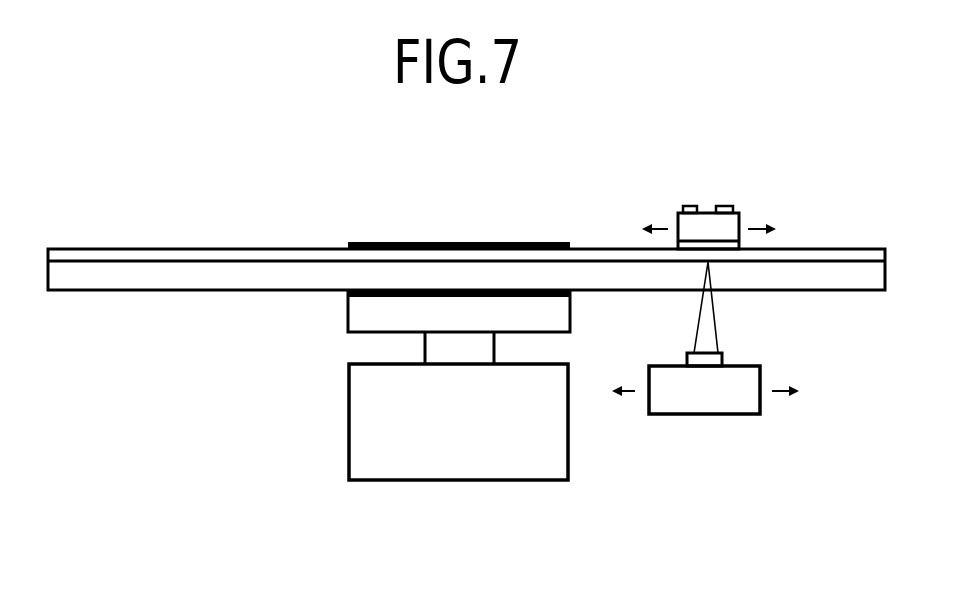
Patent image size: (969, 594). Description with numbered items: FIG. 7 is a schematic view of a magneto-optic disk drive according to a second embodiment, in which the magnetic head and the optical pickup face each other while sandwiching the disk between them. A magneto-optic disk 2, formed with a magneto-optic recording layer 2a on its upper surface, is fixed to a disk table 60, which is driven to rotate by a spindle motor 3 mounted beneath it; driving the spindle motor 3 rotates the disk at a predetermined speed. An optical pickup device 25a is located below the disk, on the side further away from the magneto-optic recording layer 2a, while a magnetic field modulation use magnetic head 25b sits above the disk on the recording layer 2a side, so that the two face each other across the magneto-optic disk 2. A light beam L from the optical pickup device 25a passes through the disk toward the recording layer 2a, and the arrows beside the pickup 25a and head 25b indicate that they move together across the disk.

The magneto-optic disk 2 is at (132, 273).
The magneto-optic recording layer 2a is at (205, 258).
The disk table 60 is at (360, 316).
The spindle motor 3 is at (362, 433).
The magnetic field modulation use magnetic head 25b is at (712, 220).
The optical pickup device 25a is at (699, 396).
The light beam L is at (716, 330).